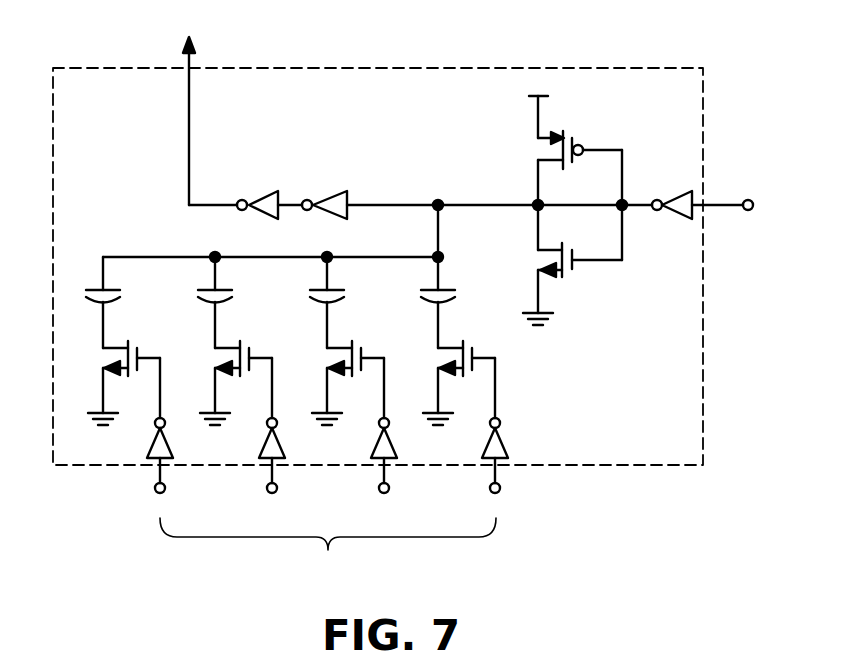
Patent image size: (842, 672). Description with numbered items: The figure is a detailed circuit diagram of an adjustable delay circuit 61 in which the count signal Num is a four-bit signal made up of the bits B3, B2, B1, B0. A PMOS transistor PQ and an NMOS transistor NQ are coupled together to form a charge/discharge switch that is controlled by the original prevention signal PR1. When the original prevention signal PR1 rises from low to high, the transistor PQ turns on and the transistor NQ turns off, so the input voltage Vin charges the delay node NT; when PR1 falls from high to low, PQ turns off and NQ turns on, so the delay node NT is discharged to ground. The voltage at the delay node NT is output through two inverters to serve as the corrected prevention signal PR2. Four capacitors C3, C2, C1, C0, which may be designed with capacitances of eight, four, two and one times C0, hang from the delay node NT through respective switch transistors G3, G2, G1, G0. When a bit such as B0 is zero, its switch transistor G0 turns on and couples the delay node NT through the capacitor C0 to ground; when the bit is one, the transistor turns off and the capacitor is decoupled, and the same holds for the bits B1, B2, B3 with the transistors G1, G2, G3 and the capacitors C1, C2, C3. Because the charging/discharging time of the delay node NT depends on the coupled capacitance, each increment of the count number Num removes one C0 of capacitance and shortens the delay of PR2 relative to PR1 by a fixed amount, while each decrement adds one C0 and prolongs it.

The adjustable delay circuit 61 is at (607, 66).
The corrected prevention signal PR2 is at (189, 110).
The original prevention signal PR1 is at (738, 192).
The delay node NT is at (438, 200).
The input voltage Vin is at (540, 105).
The PMOS transistor PQ is at (549, 143).
The NMOS transistor NQ is at (552, 263).
The capacitor C3 is at (117, 295).
The capacitor C2 is at (229, 295).
The capacitor C1 is at (341, 295).
The capacitor C0 is at (452, 295).
The switch transistor G3 is at (106, 356).
The switch transistor G2 is at (218, 356).
The switch transistor G1 is at (330, 356).
The switch transistor G0 is at (441, 356).
The bit B3 is at (159, 438).
The bit B2 is at (271, 438).
The bit B1 is at (383, 438).
The bit B0 is at (494, 438).
The count signal Num is at (328, 549).